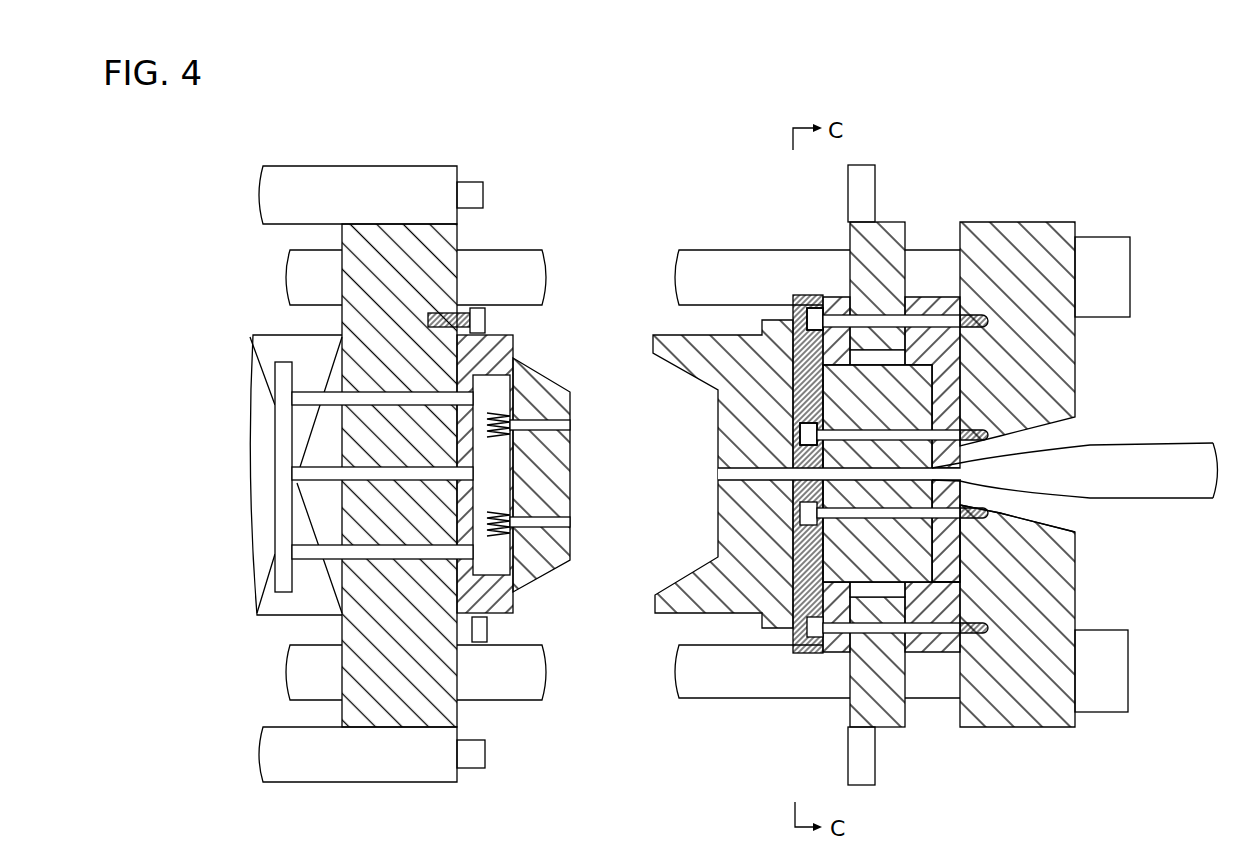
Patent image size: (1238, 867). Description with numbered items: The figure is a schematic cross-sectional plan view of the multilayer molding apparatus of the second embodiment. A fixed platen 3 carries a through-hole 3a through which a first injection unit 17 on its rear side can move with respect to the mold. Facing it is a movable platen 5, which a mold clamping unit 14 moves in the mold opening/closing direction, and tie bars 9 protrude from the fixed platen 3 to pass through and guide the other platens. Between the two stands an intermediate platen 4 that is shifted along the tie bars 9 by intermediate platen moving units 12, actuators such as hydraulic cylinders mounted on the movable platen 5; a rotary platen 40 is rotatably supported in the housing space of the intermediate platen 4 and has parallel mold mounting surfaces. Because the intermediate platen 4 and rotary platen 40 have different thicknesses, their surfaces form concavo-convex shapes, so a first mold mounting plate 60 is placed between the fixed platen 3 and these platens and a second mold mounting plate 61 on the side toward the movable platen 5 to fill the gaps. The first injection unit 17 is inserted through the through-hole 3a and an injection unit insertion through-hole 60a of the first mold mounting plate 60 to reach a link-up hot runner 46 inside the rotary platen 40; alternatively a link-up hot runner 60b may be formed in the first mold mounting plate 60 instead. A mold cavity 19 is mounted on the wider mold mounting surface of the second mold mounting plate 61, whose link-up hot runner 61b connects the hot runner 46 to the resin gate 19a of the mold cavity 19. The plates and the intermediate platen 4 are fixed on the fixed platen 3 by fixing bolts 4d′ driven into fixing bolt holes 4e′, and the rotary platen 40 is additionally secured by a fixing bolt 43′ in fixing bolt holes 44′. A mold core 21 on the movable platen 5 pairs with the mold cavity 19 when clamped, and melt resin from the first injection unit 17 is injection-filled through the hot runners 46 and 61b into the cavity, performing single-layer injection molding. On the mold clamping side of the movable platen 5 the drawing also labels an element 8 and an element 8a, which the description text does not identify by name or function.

The fixed platen 3 is at (1007, 228).
The through-hole 3a is at (1045, 513).
The intermediate platen 4 is at (888, 225).
The fixing bolts 4d′ is at (815, 306).
The fixing bolt holes 4e′ is at (798, 252).
The movable platen 5 is at (396, 238).
The shaft 8 is at (282, 432).
The push rod 8a is at (425, 550).
The tie bars 9 is at (718, 690).
The intermediate platen moving units 12 is at (300, 180).
The mold clamping unit 14 is at (262, 514).
The first injection unit 17 is at (1165, 448).
The mold cavity 19 is at (730, 348).
The resin gate 19a is at (748, 478).
The mold core 21 is at (563, 445).
The rotary platen 40 is at (908, 382).
The fixing bolt 43′ is at (797, 432).
The fixing bolt holes 44′ is at (725, 417).
The link-up hot runner 46 is at (857, 470).
The first mold mounting plate 60 is at (925, 645).
The injection unit insertion through-hole 60a is at (943, 502).
The link-up hot runner 60b is at (984, 641).
The second mold mounting plate 61 is at (833, 655).
The link-up hot runner 61b is at (797, 497).